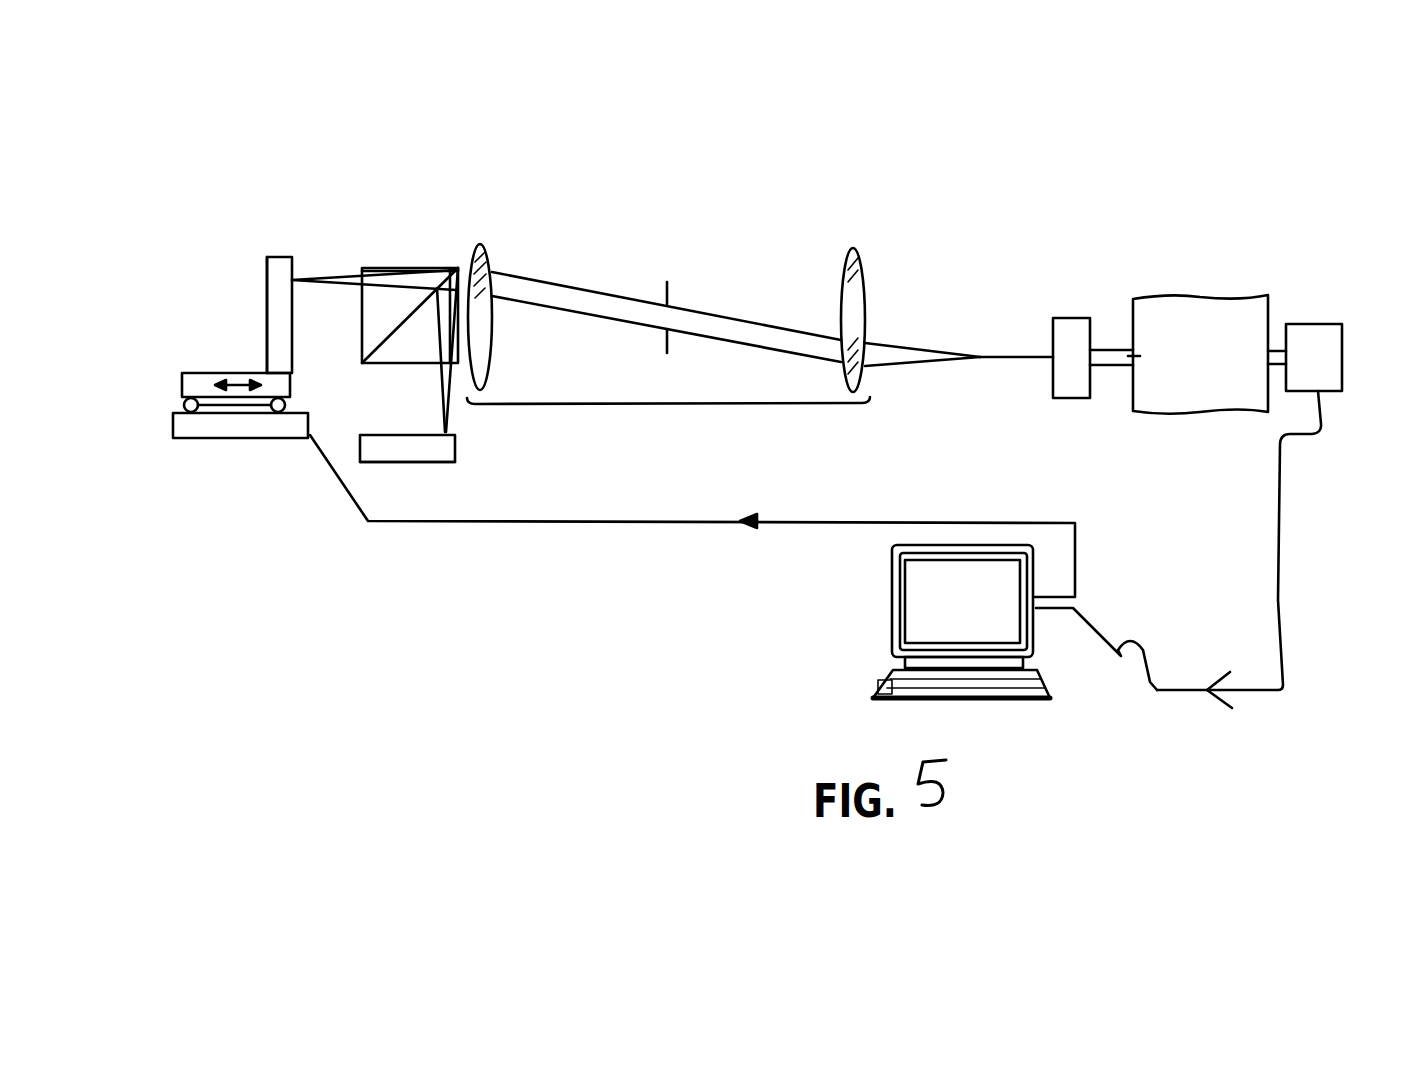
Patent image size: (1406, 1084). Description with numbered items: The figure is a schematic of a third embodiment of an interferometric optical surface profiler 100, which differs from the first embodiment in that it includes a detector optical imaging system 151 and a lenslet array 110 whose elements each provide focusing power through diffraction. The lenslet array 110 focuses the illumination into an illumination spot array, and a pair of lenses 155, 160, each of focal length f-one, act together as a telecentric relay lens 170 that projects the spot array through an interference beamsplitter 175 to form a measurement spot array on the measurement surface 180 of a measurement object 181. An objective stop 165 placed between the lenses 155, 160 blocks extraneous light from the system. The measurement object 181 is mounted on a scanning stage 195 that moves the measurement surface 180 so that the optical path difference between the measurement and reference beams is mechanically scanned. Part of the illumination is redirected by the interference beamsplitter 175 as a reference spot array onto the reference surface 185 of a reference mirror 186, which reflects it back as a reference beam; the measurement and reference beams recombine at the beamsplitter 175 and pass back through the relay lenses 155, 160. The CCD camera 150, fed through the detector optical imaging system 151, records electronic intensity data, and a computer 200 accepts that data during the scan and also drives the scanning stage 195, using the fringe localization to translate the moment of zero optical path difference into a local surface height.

The interferometric optical surface profiler 100 is at (460, 600).
The lenslet array 110 is at (1073, 317).
The CCD camera 150 is at (1331, 313).
The detector optical imaging system 151 is at (1178, 293).
The lens 155 is at (490, 258).
The lens 160 is at (858, 277).
The objective stop 165 is at (673, 290).
The telecentric relay lens 170 is at (655, 404).
The interference beamsplitter 175 is at (385, 353).
The measurement surface 180 is at (293, 307).
The measurement object 181 is at (273, 314).
The reference surface 185 is at (370, 432).
The reference mirror 186 is at (408, 450).
The scanning stage 195 is at (193, 390).
The computer 200 is at (1015, 600).